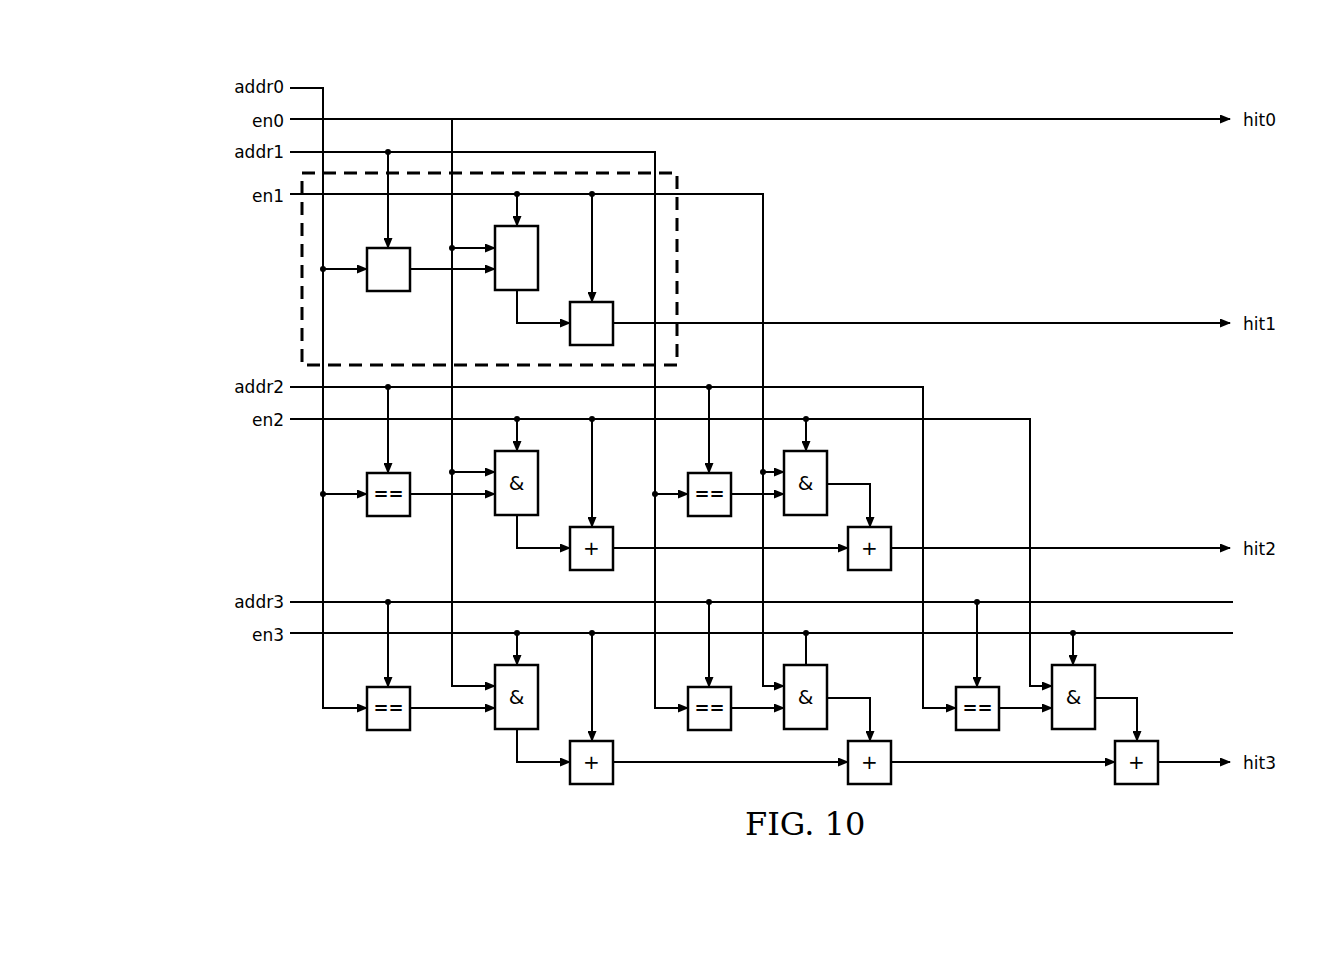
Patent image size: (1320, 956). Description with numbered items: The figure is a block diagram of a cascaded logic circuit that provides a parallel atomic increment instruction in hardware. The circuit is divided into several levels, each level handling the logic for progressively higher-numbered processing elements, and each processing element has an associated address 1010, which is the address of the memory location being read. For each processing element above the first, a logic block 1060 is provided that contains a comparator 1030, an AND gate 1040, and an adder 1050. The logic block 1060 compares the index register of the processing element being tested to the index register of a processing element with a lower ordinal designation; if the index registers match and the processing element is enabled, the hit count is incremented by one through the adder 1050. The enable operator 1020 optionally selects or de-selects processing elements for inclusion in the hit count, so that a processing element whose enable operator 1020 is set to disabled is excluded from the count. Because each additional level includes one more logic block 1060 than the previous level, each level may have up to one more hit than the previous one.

The address 1010 is at (233, 88).
The enable operator 1020 is at (250, 121).
The comparator 1030 is at (377, 294).
The AND gate 1040 is at (508, 293).
The adder 1050 is at (607, 298).
The logic block 1060 is at (299, 256).